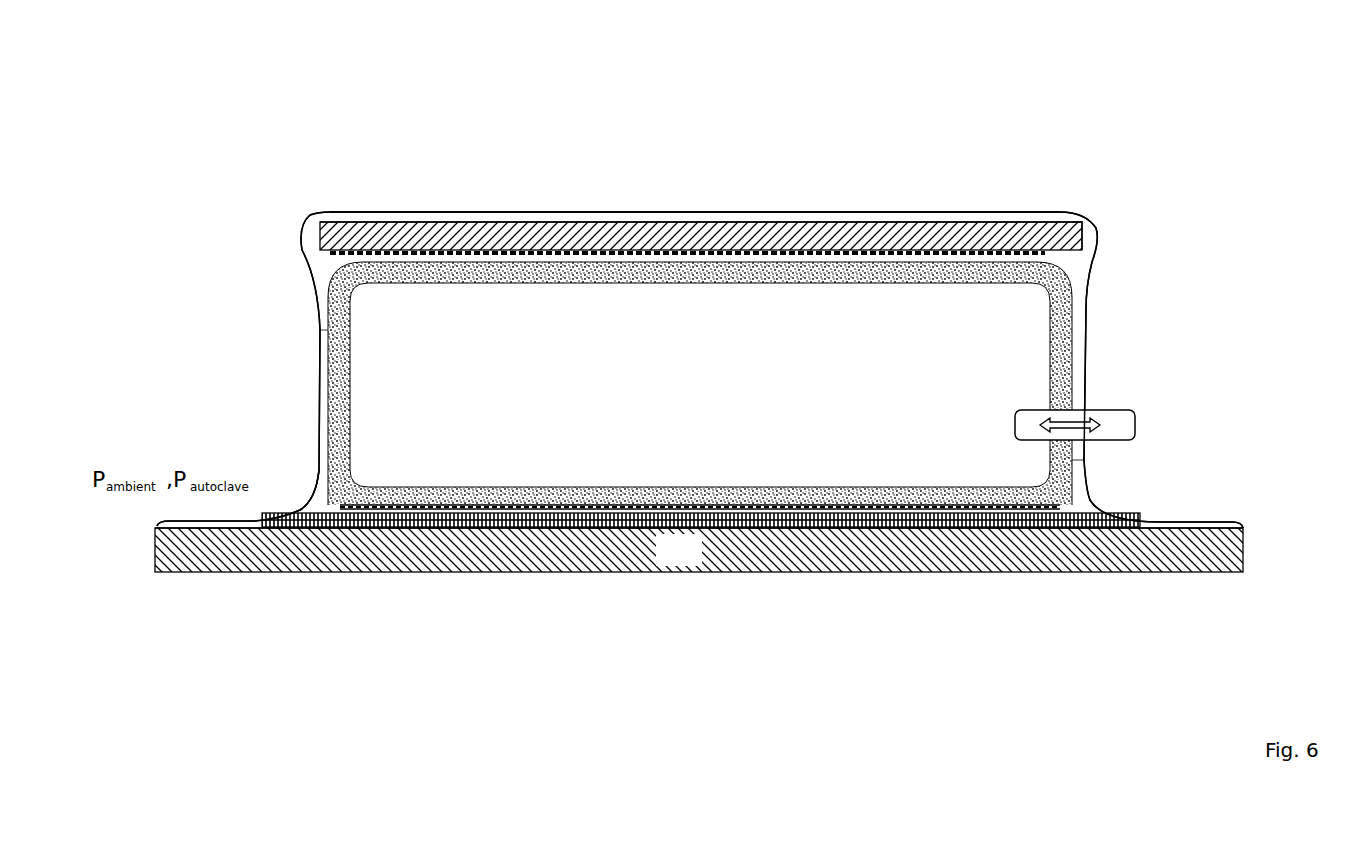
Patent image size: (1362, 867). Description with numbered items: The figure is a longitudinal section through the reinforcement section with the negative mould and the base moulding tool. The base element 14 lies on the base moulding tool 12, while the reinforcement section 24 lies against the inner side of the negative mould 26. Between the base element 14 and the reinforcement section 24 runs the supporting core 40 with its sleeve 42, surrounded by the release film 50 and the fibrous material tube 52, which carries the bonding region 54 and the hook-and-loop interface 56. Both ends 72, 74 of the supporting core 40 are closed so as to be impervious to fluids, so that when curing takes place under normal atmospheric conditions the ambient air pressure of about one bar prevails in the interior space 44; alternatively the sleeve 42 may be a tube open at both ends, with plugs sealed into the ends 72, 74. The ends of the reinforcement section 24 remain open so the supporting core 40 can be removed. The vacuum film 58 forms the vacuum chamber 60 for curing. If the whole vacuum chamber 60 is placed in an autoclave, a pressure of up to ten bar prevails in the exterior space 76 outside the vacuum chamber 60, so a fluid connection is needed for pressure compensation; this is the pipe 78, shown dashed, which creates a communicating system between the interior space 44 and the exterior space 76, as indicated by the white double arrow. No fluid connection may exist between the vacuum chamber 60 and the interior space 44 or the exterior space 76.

The base moulding tool 12 is at (694, 560).
The base element 14 is at (322, 525).
The reinforcement section 24 is at (995, 232).
The negative mould 26 is at (912, 222).
The supporting core 40 is at (327, 265).
The sleeve 42 is at (1072, 334).
The interior space 44 is at (695, 396).
The release film 50 is at (552, 233).
The fibrous material tube 52 is at (348, 515).
The bonding region 54 is at (535, 478).
The hook-and-loop interface 56 is at (700, 605).
The vacuum film 58 is at (425, 212).
The vacuum chamber 60 is at (325, 502).
The end of the supporting core 72 is at (327, 336).
The end of the supporting core 74 is at (1095, 458).
The exterior space 76 is at (697, 187).
The pipe 78 is at (1105, 410).